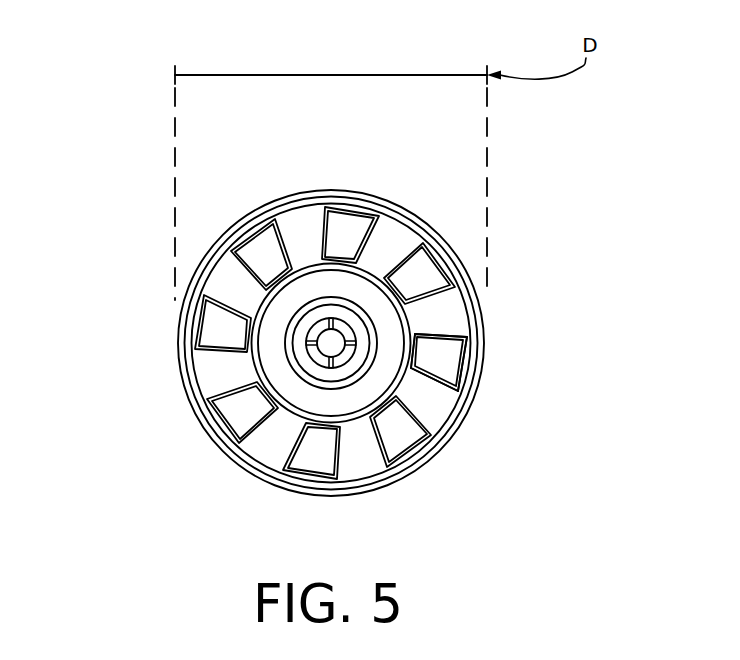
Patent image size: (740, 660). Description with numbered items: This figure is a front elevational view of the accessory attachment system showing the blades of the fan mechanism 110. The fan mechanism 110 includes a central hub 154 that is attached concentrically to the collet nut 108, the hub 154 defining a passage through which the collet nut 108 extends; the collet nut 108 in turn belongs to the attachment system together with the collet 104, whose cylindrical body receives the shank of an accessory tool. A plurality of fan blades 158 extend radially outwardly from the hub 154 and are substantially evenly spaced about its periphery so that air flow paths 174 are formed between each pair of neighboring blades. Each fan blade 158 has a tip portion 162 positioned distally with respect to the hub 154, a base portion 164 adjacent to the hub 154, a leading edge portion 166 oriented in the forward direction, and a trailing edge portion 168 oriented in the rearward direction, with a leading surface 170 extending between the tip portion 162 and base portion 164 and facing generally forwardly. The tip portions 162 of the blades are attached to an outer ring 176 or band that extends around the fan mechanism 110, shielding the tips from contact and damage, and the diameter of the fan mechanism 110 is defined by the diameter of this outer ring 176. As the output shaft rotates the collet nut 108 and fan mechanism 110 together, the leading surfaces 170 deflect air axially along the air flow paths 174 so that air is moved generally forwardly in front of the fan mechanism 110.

The collet 104 is at (437, 280).
The collet nut 108 is at (343, 330).
The fan mechanism 110 is at (110, 247).
The central hub 154 is at (267, 345).
The fan blades 158 is at (335, 220).
The tip portion 162 is at (465, 387).
The base portion 164 is at (448, 382).
The leading edge portion 166 is at (450, 380).
The trailing edge portion 168 is at (452, 337).
The leading surface 170 is at (462, 377).
The air flow paths 174 is at (297, 255).
The outer ring 176 is at (328, 312).